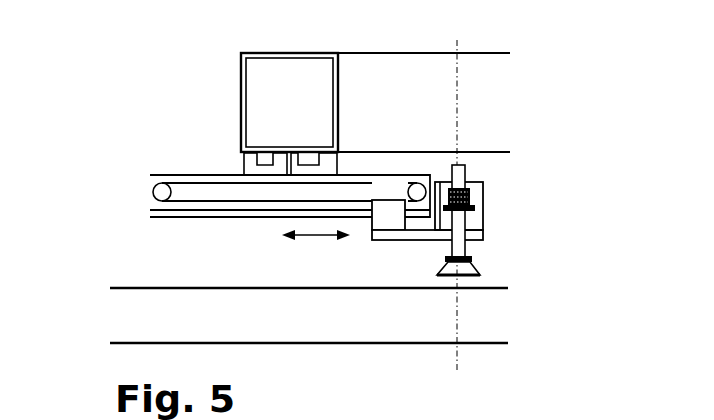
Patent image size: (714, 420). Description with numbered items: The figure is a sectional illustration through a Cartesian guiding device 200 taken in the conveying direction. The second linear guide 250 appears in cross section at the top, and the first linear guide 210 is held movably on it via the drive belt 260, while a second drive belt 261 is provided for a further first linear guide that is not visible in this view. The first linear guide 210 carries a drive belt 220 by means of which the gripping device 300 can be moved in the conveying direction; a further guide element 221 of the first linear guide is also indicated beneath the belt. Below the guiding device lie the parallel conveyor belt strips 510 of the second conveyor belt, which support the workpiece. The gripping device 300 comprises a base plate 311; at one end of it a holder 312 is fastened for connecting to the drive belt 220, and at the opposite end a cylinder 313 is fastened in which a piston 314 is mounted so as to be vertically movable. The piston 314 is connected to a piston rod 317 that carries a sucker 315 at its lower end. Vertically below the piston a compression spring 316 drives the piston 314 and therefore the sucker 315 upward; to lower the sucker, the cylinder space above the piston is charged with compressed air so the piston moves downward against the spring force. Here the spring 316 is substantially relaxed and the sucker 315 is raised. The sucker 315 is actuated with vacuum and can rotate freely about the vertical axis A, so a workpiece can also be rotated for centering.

The Cartesian guiding device 200 is at (129, 93).
The second linear guide 250 is at (246, 82).
The drive belt 260 is at (312, 157).
The second drive belt 261 is at (262, 158).
The first linear guide 210 is at (150, 218).
The drive belt 220 is at (237, 201).
The guide strip 221 is at (263, 217).
The conveyor belt strips 510 is at (112, 288).
The gripping device 300 is at (492, 205).
The holder 312 is at (392, 218).
The piston 314 is at (483, 188).
The cylinder 313 is at (443, 190).
The base plate 311 is at (481, 236).
The piston rod 317 is at (457, 165).
The compression spring 316 is at (472, 205).
The sucker 315 is at (481, 272).
The vertical axis A is at (462, 372).